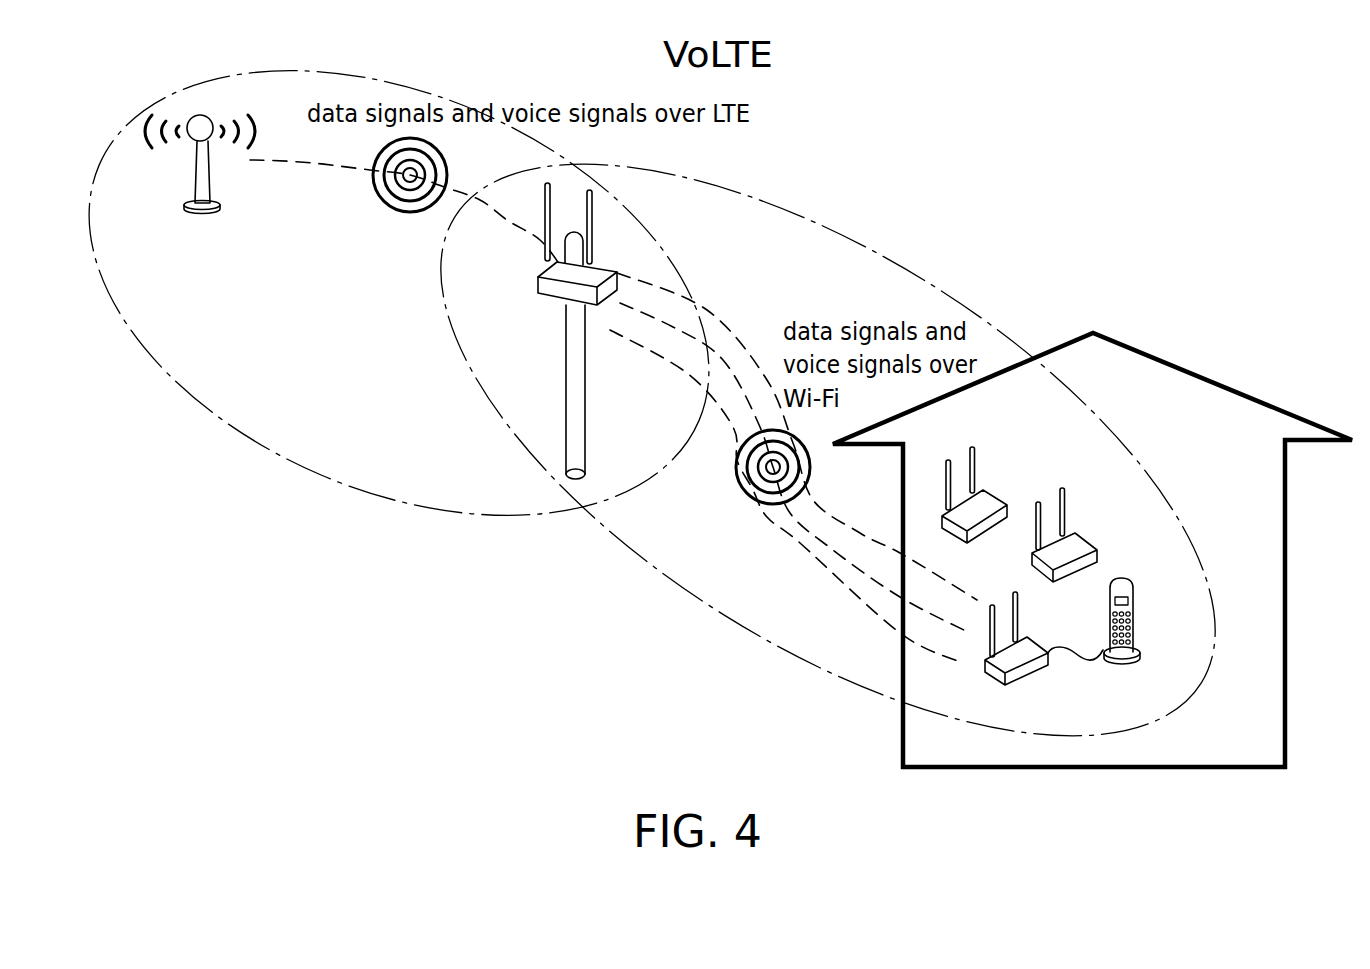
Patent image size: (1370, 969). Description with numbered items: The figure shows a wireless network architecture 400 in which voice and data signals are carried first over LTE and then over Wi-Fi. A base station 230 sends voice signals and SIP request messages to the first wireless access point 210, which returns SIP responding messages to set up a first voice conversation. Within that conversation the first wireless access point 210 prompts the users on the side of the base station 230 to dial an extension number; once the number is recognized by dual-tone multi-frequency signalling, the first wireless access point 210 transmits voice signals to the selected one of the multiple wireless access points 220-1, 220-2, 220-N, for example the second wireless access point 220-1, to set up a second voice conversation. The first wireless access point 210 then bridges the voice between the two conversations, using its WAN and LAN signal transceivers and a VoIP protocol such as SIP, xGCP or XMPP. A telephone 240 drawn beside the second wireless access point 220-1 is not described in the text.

The wireless network architecture 400 is at (168, 774).
The first wireless access point 210 is at (540, 277).
The base station 230 is at (195, 178).
The wireless access point 220-N is at (997, 490).
The wireless access point 220-2 is at (1083, 533).
The second wireless access point 220-1 is at (1040, 638).
The telephone 240 is at (1135, 603).